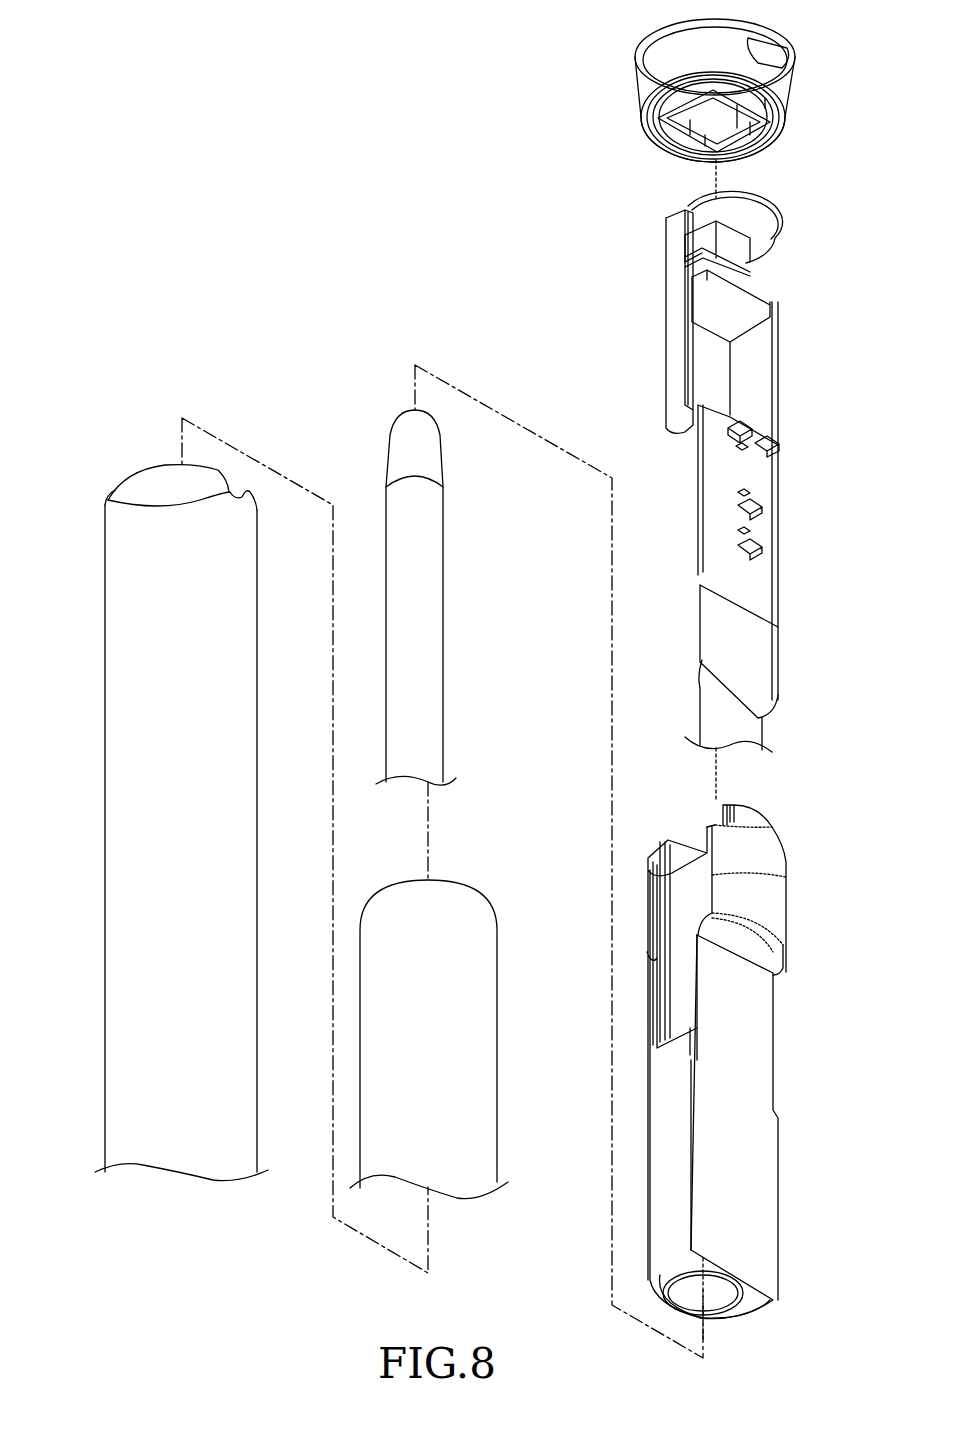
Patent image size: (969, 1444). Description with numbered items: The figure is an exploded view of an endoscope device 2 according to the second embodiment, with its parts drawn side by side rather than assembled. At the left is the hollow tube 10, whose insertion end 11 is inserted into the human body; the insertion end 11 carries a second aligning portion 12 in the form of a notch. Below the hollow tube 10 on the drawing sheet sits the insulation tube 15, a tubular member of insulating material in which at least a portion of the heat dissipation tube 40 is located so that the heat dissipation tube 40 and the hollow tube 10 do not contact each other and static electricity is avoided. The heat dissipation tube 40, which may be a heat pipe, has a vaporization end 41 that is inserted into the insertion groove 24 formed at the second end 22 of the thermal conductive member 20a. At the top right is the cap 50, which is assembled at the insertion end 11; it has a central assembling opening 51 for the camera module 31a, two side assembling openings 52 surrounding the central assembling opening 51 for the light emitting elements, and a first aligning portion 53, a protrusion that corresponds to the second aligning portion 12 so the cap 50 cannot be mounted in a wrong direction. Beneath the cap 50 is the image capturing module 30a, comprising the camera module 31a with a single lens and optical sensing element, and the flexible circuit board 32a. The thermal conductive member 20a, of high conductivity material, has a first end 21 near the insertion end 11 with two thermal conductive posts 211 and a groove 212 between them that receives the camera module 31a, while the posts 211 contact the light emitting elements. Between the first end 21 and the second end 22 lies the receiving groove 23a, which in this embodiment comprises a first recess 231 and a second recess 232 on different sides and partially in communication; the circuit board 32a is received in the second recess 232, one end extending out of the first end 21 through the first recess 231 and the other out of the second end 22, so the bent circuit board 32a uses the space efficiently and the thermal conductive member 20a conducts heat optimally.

The endoscope device 2 is at (294, 184).
The hollow tube 10 is at (105, 575).
The insertion end 11 is at (155, 478).
The second aligning portion 12 is at (115, 500).
The insulation tube 15 is at (497, 905).
The heat dissipation tube 40 is at (446, 523).
The vaporization end 41 is at (427, 448).
The cap 50 is at (790, 28).
The central assembling opening 51 is at (788, 135).
The side assembling openings 52 is at (790, 100).
The first aligning portion 53 is at (780, 55).
The image capturing module 30a is at (778, 232).
The camera module 31a is at (755, 262).
The circuit board 32a is at (770, 480).
The thermal conductive member 20a is at (785, 926).
The first end 21 is at (770, 858).
The thermal conductive posts 211 is at (755, 822).
The groove 212 is at (693, 836).
The second end 22 is at (750, 1295).
The receiving groove 23a is at (845, 1010).
The first recess 231 is at (683, 987).
The second recess 232 is at (722, 1088).
The insertion groove 24 is at (725, 1302).